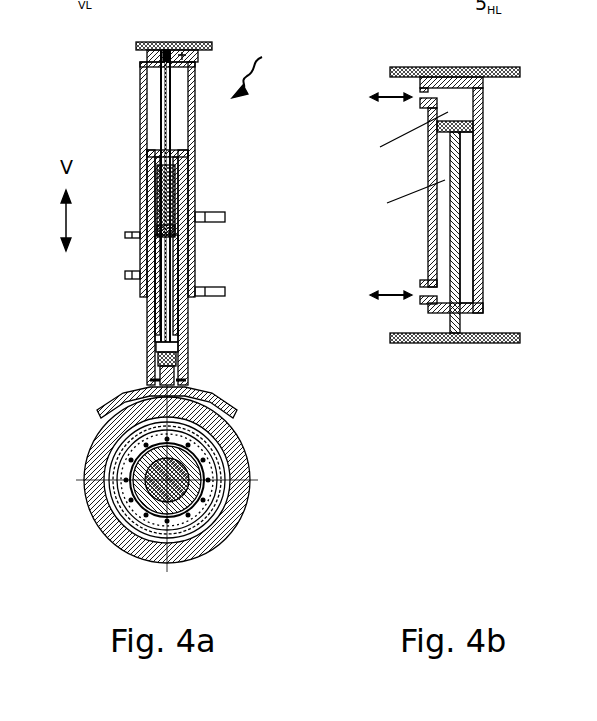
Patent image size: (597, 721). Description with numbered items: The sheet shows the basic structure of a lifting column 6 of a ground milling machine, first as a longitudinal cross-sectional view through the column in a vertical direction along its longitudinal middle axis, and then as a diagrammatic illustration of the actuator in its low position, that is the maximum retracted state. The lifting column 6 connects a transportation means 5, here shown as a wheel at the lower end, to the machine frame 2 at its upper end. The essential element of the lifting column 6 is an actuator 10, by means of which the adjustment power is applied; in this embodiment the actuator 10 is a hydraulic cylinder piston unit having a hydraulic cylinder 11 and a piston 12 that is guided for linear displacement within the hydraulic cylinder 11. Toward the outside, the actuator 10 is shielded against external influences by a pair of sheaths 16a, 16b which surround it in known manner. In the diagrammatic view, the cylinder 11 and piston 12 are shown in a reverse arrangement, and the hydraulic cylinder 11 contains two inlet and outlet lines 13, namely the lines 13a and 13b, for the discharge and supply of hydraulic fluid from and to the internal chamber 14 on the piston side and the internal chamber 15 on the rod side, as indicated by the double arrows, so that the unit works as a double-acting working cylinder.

In FIG. 4a, the machine frame 2 is at (172, 42).
In FIG. 4b, the machine frame 2 is at (490, 72).
In FIG. 4a, the transportation means 5 is at (230, 517).
In FIG. 4b, the transportation means 5 is at (472, 343).
In FIG. 4a, the lifting column 6 is at (255, 69).
In FIG. 4a, the actuator 10 is at (170, 203).
In FIG. 4b, the actuator 10 is at (403, 236).
In FIG. 4a, the hydraulic cylinder 11 is at (172, 297).
In FIG. 4b, the hydraulic cylinder 11 is at (483, 100).
In FIG. 4a, the piston 12 is at (172, 123).
In FIG. 4b, the piston 12 is at (448, 238).
In FIG. 4b, the inlet and outlet lines 13 is at (530, 89).
In FIG. 4b, the inlet and outlet line 13a is at (371, 97).
In FIG. 4b, the inlet and outlet line 13b is at (371, 295).
In FIG. 4b, the piston-side internal chamber 14 is at (460, 110).
In FIG. 4b, the rod-side internal chamber 15 is at (467, 232).
In FIG. 4a, the sheath 16a is at (142, 112).
In FIG. 4a, the sheath 16b is at (148, 342).